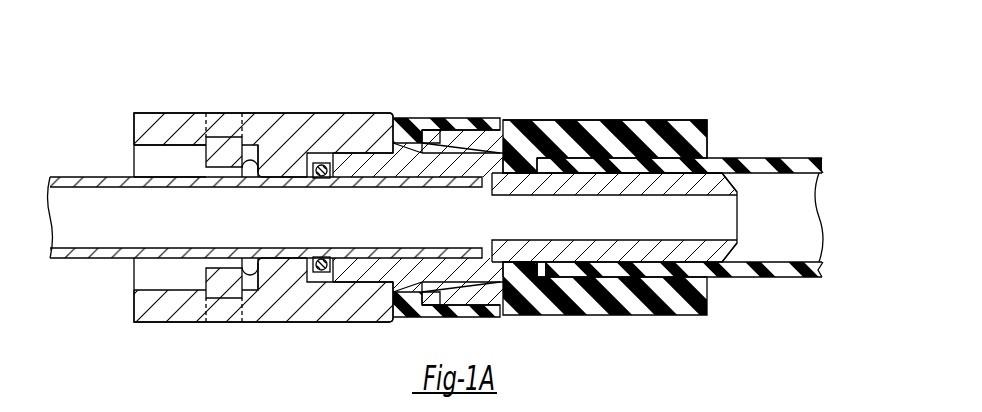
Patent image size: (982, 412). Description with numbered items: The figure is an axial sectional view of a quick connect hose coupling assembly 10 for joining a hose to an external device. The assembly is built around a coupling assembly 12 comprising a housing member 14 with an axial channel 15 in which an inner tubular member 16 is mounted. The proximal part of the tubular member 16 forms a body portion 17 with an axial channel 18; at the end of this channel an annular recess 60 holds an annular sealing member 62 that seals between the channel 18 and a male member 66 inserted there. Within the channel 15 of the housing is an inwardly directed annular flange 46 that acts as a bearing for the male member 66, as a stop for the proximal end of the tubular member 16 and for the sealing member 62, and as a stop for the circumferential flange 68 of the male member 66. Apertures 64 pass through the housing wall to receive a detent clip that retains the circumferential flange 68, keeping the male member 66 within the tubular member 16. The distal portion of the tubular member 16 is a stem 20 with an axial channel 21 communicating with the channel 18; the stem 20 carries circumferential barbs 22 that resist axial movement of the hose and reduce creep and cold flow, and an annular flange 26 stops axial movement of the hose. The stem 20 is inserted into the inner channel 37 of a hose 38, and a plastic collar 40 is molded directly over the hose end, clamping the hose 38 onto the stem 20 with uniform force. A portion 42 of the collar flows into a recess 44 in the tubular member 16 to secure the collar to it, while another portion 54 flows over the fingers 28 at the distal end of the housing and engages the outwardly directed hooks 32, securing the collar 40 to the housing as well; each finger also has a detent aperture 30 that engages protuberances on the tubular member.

The quick connect hose coupling assembly 10 is at (586, 87).
The coupling assembly 12 is at (320, 105).
The housing member 14 is at (275, 122).
The axial channel 15 is at (150, 162).
The inner tubular member 16 is at (405, 167).
The body portion 17 is at (350, 165).
The axial channel 18 is at (395, 187).
The stem 20 is at (704, 186).
The axial channel 21 is at (740, 227).
The circumferential barbs 22 is at (580, 176).
The annular flange 26 is at (517, 278).
The fingers 28 is at (477, 150).
The detent aperture 30 is at (405, 150).
The hooks 32 is at (456, 150).
The inner channel 37 is at (800, 213).
The hose 38 is at (748, 160).
The collar 40 is at (628, 135).
The portion of the collar 42 is at (525, 168).
The recess 44 is at (507, 172).
The annular flange 46 is at (288, 300).
The portion of the collar 54 is at (431, 148).
The annular recess 60 is at (318, 176).
The annular sealing member 62 is at (288, 178).
The apertures 64 is at (222, 148).
The male member 66 is at (104, 262).
The circumferential flange 68 is at (245, 170).